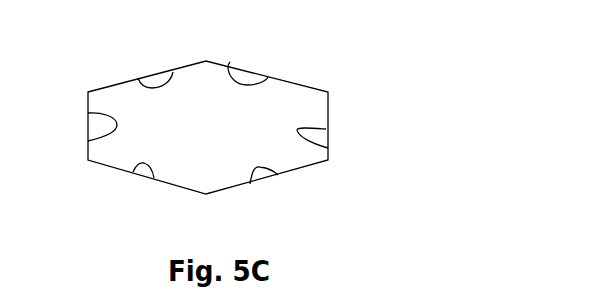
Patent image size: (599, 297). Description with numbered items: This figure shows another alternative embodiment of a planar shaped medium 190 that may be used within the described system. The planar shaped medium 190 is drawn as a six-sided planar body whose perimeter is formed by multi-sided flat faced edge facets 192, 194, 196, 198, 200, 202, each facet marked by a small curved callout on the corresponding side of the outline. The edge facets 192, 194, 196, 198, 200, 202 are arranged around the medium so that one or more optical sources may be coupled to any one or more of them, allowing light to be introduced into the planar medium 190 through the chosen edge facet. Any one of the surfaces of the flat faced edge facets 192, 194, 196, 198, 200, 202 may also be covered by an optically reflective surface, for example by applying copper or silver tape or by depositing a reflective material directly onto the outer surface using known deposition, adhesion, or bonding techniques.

The planar shaped medium 190 is at (349, 208).
The multi-sided flat faced edge facet 192 is at (328, 148).
The multi-sided flat faced edge facet 194 is at (230, 62).
The multi-sided flat faced edge facet 196 is at (138, 78).
The multi-sided flat faced edge facet 198 is at (88, 141).
The multi-sided flat faced edge facet 200 is at (133, 172).
The multi-sided flat faced edge facet 202 is at (250, 184).